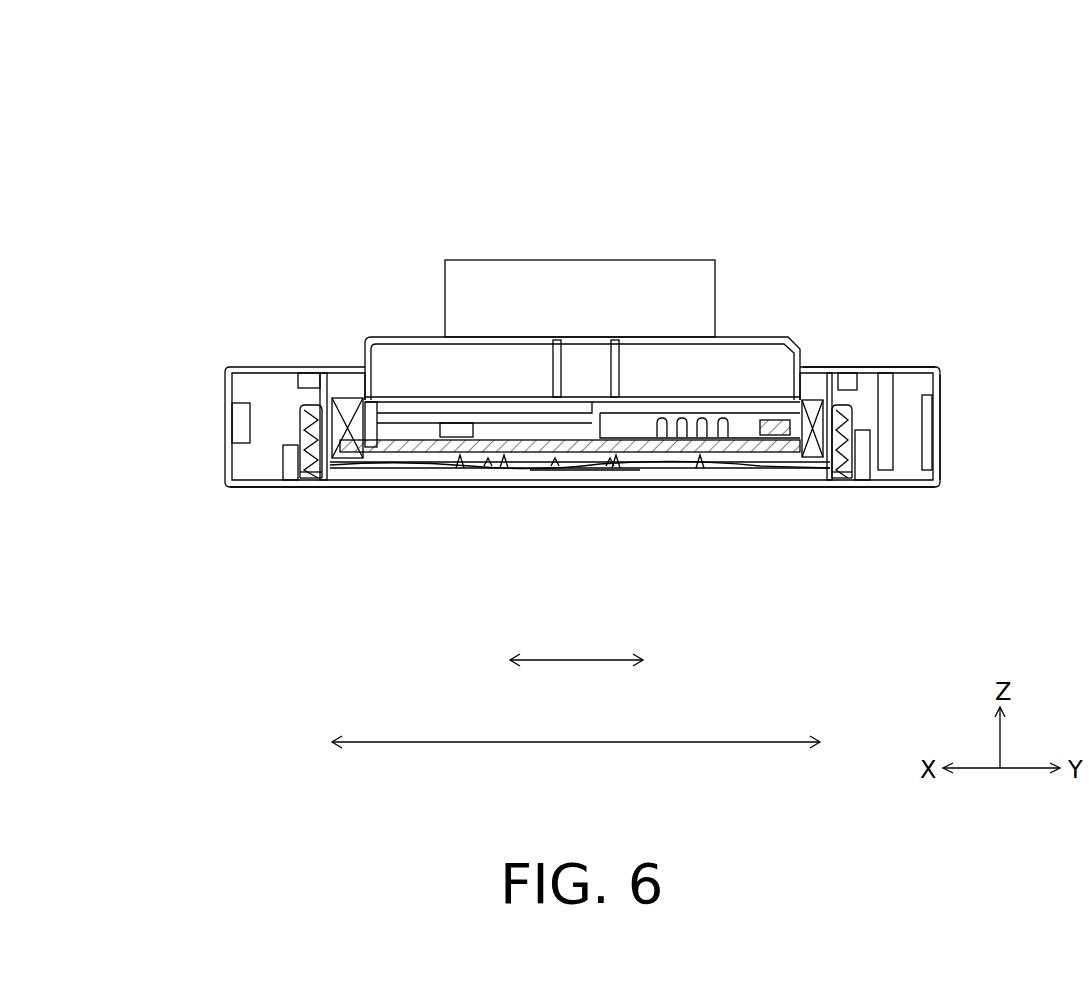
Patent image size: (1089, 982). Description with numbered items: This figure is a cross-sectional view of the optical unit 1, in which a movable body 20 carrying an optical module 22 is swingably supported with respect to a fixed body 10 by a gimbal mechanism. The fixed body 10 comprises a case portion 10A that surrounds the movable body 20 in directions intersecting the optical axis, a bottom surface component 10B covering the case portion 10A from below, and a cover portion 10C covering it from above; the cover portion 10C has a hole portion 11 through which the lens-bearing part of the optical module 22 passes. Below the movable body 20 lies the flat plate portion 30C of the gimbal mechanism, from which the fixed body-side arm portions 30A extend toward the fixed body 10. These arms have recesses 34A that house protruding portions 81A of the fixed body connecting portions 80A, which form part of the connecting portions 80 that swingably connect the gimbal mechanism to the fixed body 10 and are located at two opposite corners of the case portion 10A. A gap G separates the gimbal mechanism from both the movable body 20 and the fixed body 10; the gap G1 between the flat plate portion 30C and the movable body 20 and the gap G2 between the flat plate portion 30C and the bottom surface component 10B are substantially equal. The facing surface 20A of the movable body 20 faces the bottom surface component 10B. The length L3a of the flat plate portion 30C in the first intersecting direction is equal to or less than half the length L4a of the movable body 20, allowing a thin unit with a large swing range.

The optical unit 1 is at (983, 77).
The fixed body 10 is at (940, 377).
The case portion 10A is at (903, 400).
The bottom surface component 10B is at (905, 490).
The cover portion 10C is at (910, 362).
The hole portion 11 is at (807, 365).
The movable body 20 is at (782, 337).
The facing surface 20A is at (730, 462).
The optical module 22 is at (717, 305).
The fixed body-side arm portions 30A is at (458, 462).
The flat plate portion 30C is at (645, 462).
The recesses 34A is at (345, 420).
The connecting portions 80 is at (290, 417).
The fixed body connecting portions 80A is at (295, 478).
The protruding portions 81A is at (322, 478).
The gap G is at (488, 462).
The gap G1 is at (555, 462).
The gap G2 is at (610, 462).
The length of the flat plate portion L3a is at (576, 646).
The length of the movable body L4a is at (576, 727).